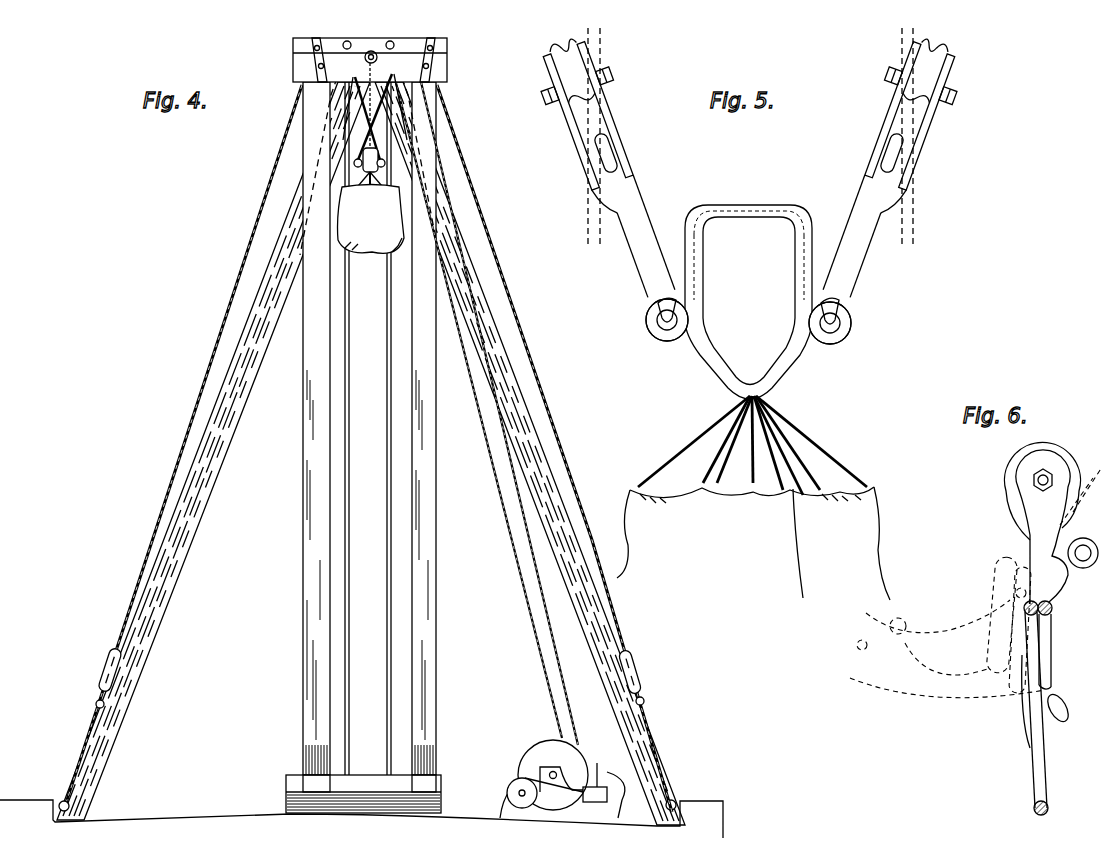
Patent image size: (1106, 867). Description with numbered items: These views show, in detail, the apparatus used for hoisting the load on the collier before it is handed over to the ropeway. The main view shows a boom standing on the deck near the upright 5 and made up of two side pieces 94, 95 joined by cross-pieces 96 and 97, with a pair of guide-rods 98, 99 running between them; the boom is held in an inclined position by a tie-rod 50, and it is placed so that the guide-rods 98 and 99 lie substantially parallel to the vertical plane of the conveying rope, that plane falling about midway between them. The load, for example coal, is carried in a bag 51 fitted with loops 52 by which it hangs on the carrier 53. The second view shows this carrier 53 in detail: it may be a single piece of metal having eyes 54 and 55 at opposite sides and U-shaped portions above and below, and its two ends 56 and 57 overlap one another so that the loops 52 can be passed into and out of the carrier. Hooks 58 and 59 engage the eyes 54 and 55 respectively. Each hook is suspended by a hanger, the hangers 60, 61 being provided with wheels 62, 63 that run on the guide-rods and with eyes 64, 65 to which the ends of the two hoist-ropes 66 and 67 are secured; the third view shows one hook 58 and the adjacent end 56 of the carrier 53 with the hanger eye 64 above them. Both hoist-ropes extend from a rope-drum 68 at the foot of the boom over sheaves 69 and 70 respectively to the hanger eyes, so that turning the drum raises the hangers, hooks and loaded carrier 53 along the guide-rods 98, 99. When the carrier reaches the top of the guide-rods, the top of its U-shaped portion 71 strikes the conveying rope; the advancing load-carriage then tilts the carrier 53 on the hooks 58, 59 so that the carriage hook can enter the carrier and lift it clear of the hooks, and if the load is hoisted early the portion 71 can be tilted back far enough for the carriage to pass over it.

In FIG. 4, the upright 5 is at (246, 370).
In FIG. 4, the tie-rod 50 is at (371, 50).
In FIG. 4, the bag 51 is at (371, 212).
In FIG. 5, the bag 51 is at (753, 543).
In FIG. 5, the loops 52 is at (698, 443).
In FIG. 5, the carrier 53 is at (797, 362).
In FIG. 6, the carrier 53 is at (1035, 762).
In FIG. 5, the eye 54 is at (848, 332).
In FIG. 5, the eye 55 is at (660, 340).
In FIG. 5, the end of carrier 56 is at (806, 264).
In FIG. 6, the end of carrier 56 is at (1052, 656).
In FIG. 5, the end of carrier 57 is at (703, 277).
In FIG. 5, the hook 58 is at (836, 317).
In FIG. 6, the hook 58 is at (1055, 712).
In FIG. 5, the hook 59 is at (658, 313).
In FIG. 5, the hanger 60 is at (912, 180).
In FIG. 5, the hanger 61 is at (633, 206).
In FIG. 5, the wheel 62 is at (945, 64).
In FIG. 5, the wheel 63 is at (586, 56).
In FIG. 5, the eye 64 is at (884, 150).
In FIG. 6, the eye 64 is at (1083, 568).
In FIG. 5, the eye 65 is at (619, 152).
In FIG. 4, the hoist-rope 66 is at (546, 514).
In FIG. 4, the hoist-rope 67 is at (486, 412).
In FIG. 4, the rope-drum 68 is at (545, 747).
In FIG. 4, the sheave 69 is at (396, 72).
In FIG. 4, the sheave 70 is at (351, 75).
In FIG. 5, the U-shaped portion 71 is at (752, 210).
In FIG. 4, the side piece 94 is at (435, 594).
In FIG. 4, the side piece 95 is at (305, 598).
In FIG. 4, the cross-piece 96 is at (442, 792).
In FIG. 4, the cross-piece 97 is at (447, 68).
In FIG. 4, the guide-rod 98 is at (389, 522).
In FIG. 4, the guide-rod 99 is at (349, 622).